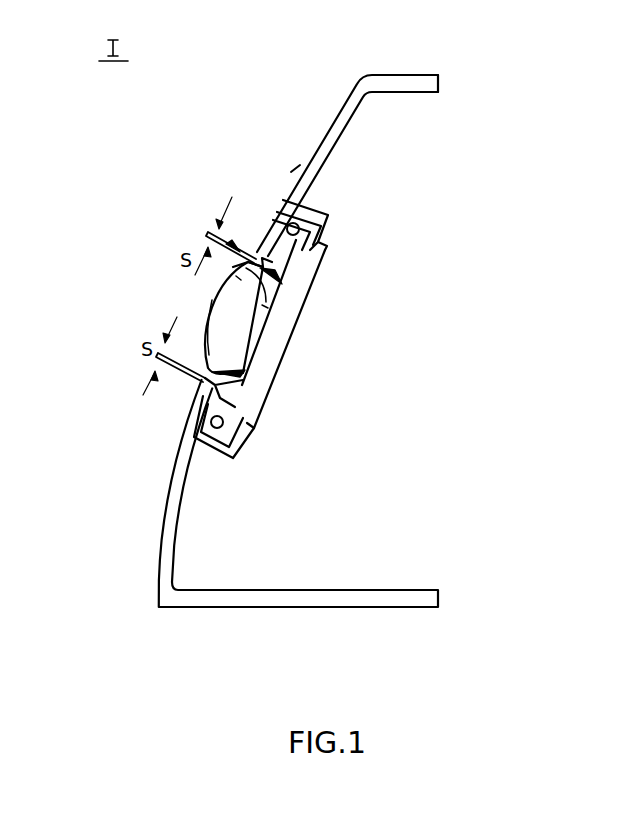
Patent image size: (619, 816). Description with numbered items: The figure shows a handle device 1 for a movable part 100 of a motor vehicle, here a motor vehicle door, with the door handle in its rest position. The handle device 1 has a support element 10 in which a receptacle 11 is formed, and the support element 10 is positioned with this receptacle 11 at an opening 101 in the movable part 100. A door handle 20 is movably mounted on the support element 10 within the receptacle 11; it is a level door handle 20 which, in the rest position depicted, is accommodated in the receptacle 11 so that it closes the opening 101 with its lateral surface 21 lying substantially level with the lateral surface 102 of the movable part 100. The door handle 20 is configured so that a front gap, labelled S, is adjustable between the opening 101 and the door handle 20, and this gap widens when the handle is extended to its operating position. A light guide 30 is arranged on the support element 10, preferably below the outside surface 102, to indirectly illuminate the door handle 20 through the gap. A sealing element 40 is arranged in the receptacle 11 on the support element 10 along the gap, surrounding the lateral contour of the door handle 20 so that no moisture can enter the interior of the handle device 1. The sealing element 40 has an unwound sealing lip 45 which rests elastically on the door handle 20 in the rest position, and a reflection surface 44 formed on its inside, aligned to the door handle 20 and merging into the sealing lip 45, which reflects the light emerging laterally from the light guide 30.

The handle device 1 is at (497, 165).
The movable part 100 is at (327, 137).
The lateral surface of the movable part 102 is at (296, 170).
The opening 101 is at (217, 237).
The door handle 20 is at (233, 305).
The lateral surface of the door handle 21 is at (211, 314).
The receptacle 11 is at (293, 259).
The support element 10 is at (317, 207).
The sealing element 40 is at (320, 247).
The light guide 30 is at (298, 231).
The reflection surface 44 is at (269, 256).
The sealing lip 45 is at (230, 374).